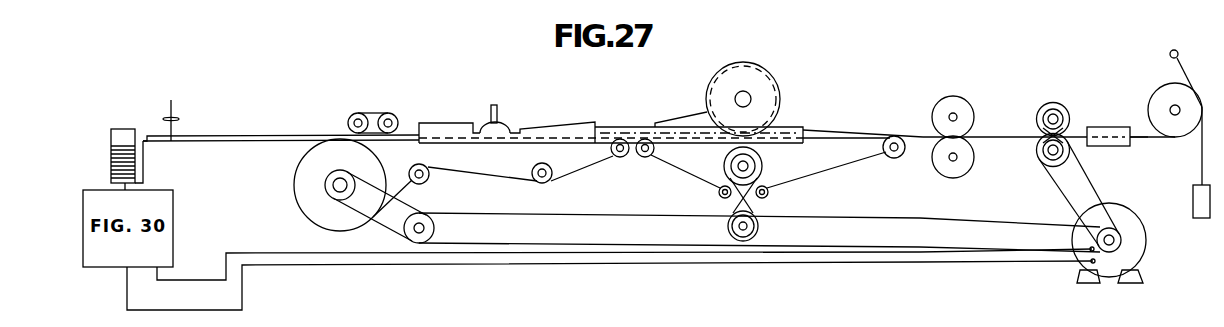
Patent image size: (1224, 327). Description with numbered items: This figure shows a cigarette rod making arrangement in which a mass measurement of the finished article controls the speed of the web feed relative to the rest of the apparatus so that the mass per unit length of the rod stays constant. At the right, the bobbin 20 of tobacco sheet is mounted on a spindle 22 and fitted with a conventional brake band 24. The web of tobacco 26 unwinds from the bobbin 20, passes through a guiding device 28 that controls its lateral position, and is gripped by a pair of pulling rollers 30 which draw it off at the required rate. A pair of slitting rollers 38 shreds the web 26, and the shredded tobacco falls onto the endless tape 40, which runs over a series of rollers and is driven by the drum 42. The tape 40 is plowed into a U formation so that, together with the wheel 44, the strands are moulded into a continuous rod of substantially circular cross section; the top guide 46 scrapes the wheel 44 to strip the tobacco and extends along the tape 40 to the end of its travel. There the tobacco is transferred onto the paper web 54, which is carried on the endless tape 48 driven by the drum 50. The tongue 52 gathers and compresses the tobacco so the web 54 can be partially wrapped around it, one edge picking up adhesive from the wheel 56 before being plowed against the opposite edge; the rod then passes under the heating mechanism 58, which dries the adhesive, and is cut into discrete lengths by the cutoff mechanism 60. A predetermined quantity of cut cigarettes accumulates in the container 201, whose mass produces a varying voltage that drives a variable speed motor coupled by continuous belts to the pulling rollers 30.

The bobbin of tobacco sheet 20 is at (1168, 86).
The spindle 22 is at (1171, 110).
The brake band 24 is at (1202, 163).
The web of tobacco 26 is at (1143, 141).
The guiding device 28 is at (1097, 147).
The pulling rollers 30 is at (1066, 100).
The slitting rollers 38 is at (959, 94).
The endless tape 40 is at (812, 182).
The drum 42 is at (758, 164).
The wheel 44 is at (765, 83).
The top guide 46 is at (689, 115).
The endless tape 48 is at (503, 180).
The drum 50 is at (313, 216).
The tongue 52 is at (560, 123).
The paper web 54 is at (626, 157).
The wheel 56 is at (498, 109).
The heating mechanism 58 is at (399, 114).
The cutoff mechanism 60 is at (173, 112).
The container 201 is at (111, 152).